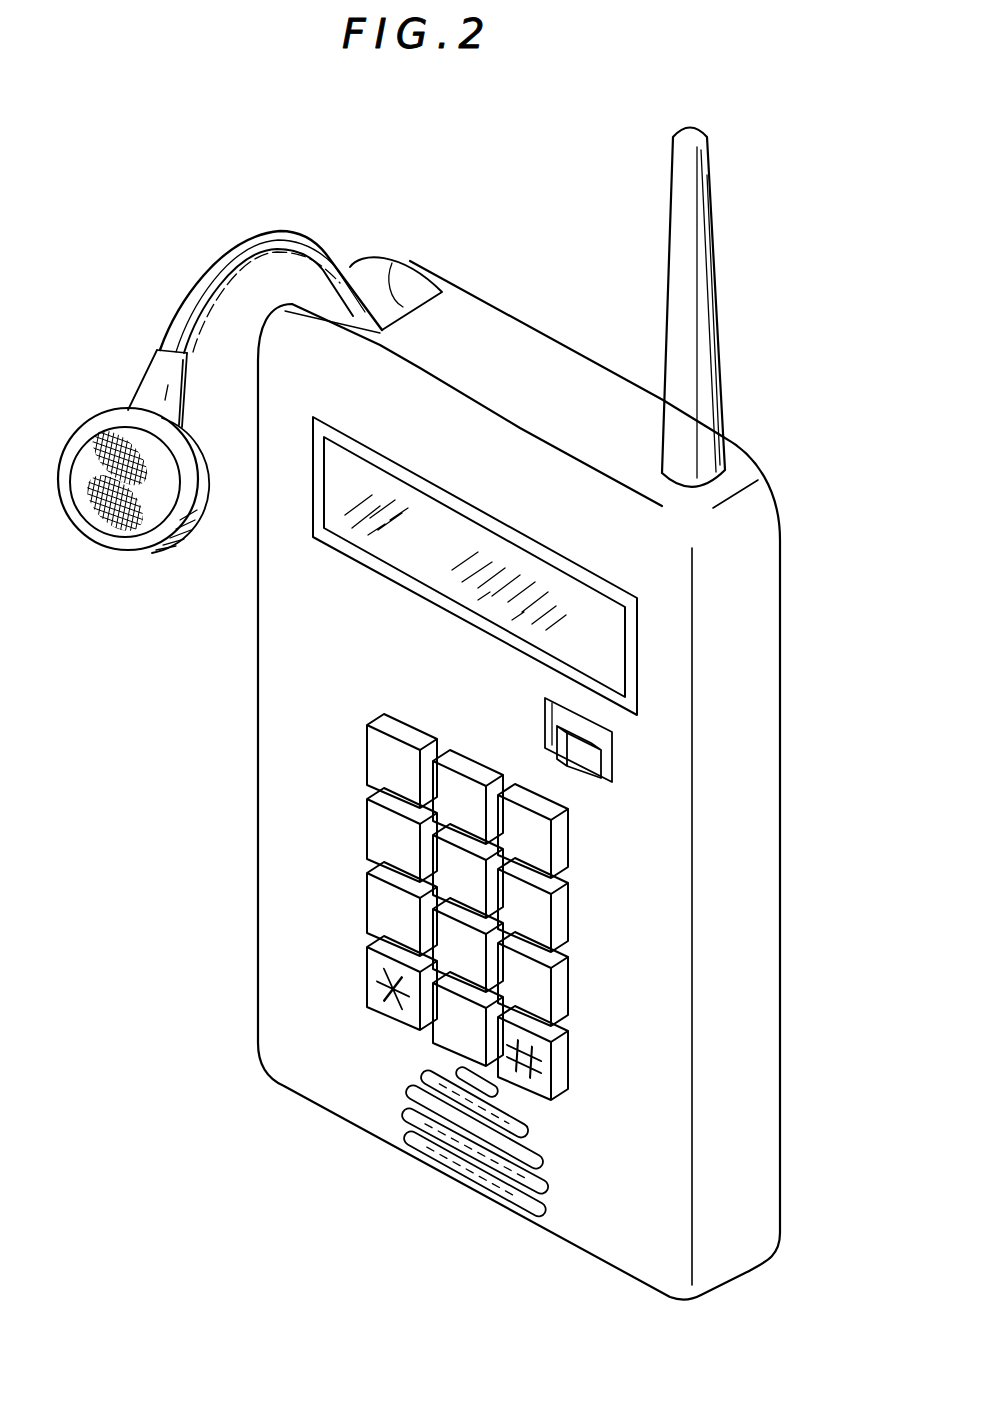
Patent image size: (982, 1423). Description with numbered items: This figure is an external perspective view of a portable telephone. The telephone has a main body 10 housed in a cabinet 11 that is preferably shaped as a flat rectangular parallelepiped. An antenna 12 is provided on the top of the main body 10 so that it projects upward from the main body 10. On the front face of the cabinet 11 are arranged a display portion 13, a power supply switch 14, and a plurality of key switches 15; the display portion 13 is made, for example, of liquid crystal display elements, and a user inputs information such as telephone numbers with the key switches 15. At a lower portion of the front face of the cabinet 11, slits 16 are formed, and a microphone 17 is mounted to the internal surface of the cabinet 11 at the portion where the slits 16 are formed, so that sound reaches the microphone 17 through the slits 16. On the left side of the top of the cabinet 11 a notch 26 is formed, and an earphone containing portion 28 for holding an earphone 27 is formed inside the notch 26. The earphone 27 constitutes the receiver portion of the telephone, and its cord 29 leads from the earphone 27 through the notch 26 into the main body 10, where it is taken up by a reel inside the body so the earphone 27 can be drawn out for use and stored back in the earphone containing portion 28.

The main body 10 is at (236, 968).
The cabinet 11 is at (292, 696).
The antenna 12 is at (698, 290).
The display portion 13 is at (412, 560).
The power supply switch 14 is at (580, 741).
The key switches 15 is at (427, 973).
The slits 16 is at (527, 1137).
The microphone 17 is at (400, 1128).
The notch 26 is at (404, 305).
The earphone 27 is at (92, 510).
The earphone containing portion 28 is at (328, 295).
The cord 29 is at (294, 238).